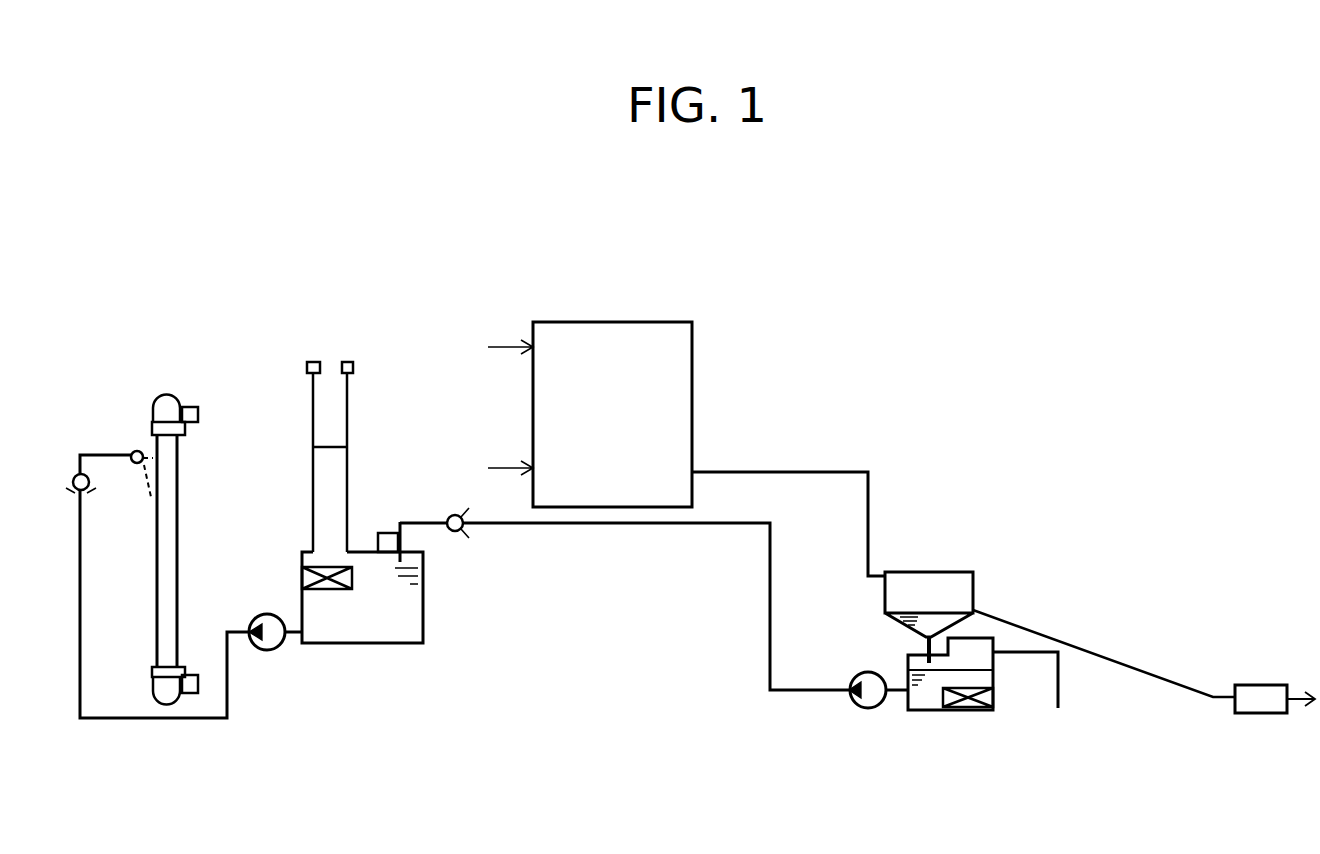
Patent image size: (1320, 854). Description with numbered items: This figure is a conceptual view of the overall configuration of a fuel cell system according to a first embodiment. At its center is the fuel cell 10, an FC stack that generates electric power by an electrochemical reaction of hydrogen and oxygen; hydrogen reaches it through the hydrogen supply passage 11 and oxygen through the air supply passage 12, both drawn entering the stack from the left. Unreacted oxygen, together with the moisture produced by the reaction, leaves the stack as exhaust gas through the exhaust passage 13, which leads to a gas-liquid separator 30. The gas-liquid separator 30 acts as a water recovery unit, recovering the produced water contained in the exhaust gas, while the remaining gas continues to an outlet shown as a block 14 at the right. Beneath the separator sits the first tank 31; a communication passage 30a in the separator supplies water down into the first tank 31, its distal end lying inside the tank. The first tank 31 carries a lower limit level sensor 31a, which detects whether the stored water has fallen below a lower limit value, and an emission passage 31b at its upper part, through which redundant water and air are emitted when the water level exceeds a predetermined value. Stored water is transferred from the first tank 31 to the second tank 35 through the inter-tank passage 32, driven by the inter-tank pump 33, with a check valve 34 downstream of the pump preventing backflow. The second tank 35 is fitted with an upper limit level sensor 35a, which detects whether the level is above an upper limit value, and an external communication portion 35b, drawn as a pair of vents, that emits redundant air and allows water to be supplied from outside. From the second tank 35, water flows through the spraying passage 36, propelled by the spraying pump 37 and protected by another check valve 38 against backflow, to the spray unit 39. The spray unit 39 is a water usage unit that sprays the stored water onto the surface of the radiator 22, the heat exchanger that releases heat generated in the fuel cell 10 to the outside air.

The fuel cell 10 is at (597, 322).
The hydrogen supply passage 11 is at (505, 345).
The air supply passage 12 is at (507, 467).
The exhaust passage 13 is at (870, 488).
The discharge unit 14 is at (1260, 685).
The radiator 22 is at (168, 395).
The gas-liquid separator 30 is at (927, 572).
The communication passage 30a is at (927, 645).
The first tank 31 is at (927, 710).
The lower limit level sensor 31a is at (977, 710).
The emission passage 31b is at (1060, 683).
The inter-tank passage 32 is at (623, 527).
The inter-tank pump 33 is at (867, 710).
The check valve 34 is at (450, 533).
The second tank 35 is at (360, 643).
The upper limit level sensor 35a is at (310, 563).
The external communication portion 35b is at (312, 360).
The spraying passage 36 is at (120, 720).
The spraying pump 37 is at (267, 650).
The check valve 38 is at (70, 473).
The spray unit 39 is at (130, 452).